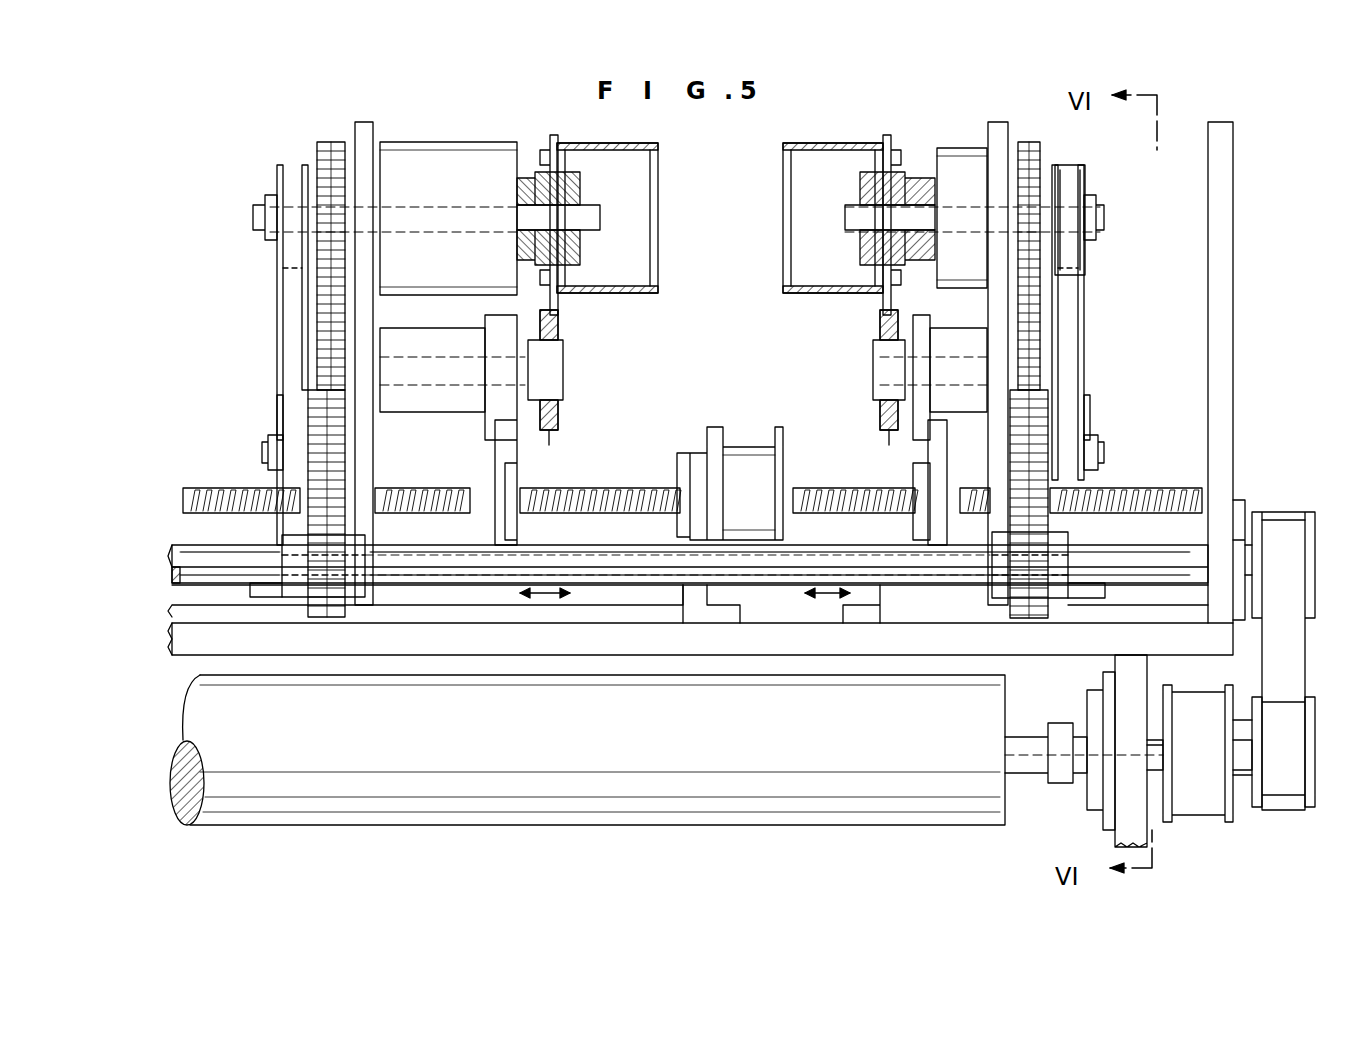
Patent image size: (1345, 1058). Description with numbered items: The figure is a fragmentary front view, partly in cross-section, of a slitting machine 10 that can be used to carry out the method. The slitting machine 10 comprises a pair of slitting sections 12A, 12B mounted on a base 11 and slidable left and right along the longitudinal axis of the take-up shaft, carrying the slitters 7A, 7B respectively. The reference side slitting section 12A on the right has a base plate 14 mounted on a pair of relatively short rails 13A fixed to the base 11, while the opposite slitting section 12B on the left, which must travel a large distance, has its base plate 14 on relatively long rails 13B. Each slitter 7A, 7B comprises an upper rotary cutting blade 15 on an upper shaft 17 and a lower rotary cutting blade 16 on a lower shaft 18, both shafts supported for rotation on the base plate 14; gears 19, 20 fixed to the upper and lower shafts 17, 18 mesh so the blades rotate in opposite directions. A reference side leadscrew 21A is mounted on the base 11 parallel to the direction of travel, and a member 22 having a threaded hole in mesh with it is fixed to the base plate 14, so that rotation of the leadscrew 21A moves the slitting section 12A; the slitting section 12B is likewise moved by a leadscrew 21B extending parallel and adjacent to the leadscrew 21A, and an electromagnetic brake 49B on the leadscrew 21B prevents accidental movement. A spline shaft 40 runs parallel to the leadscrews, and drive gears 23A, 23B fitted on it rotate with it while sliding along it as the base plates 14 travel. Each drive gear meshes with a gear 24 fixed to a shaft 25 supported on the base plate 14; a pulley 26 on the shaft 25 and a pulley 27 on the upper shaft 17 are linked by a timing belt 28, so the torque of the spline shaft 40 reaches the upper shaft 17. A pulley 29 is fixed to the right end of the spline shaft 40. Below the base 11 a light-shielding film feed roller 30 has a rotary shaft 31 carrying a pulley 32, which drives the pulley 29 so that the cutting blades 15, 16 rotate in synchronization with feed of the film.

The slitting machine 10 is at (1272, 190).
The base 11 is at (1202, 638).
The reference side slitting section 12A is at (958, 128).
The opposite side slitting section 12B is at (370, 104).
The short rails 13A is at (868, 623).
The long rails 13B is at (612, 623).
The base plate 14 is at (378, 130).
The upper rotary cutting blade 15 is at (588, 278).
The lower rotary cutting blade 16 is at (558, 300).
The upper shaft 17 is at (260, 222).
The lower shaft 18 is at (562, 378).
The gear 19 is at (320, 144).
The gear 20 is at (316, 330).
The reference side leadscrew 21A is at (1160, 488).
The leadscrew 21B is at (631, 488).
The member having a threaded hole 22 is at (518, 474).
The drive gear 23A is at (1024, 598).
The drive gear 23B is at (346, 598).
The gear 24 is at (320, 430).
The shaft 25 is at (262, 456).
The pulley 26 is at (278, 400).
The pulley 27 is at (1082, 164).
The timing belt 28 is at (288, 284).
The pulley 29 is at (1268, 512).
The light-shielding film feed roller 30 is at (958, 808).
The rotary shaft 31 is at (1154, 765).
The pulley 32 is at (1256, 809).
The spline shaft 40 is at (797, 583).
The electromagnetic brake 49B is at (754, 456).
The slitter 7A is at (808, 300).
The slitter 7B is at (648, 300).